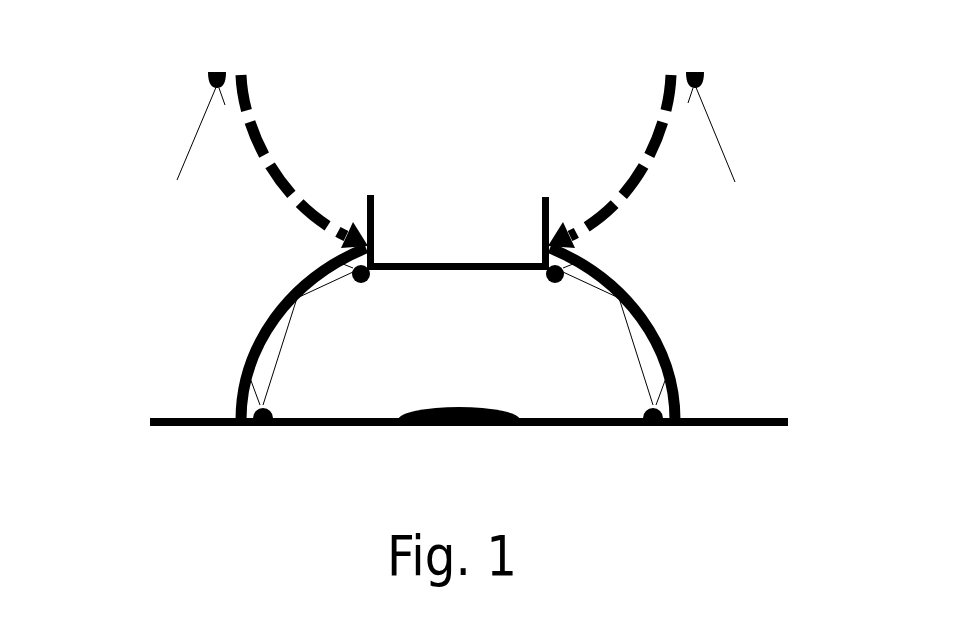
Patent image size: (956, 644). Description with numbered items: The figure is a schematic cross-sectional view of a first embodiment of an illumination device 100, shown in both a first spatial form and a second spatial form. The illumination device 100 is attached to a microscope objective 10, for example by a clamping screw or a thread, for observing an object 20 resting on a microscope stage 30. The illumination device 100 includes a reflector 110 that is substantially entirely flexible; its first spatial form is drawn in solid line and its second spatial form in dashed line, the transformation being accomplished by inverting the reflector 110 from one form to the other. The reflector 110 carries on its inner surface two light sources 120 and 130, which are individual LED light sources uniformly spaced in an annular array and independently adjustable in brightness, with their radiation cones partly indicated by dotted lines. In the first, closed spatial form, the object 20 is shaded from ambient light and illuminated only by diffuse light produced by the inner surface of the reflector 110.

The illumination device 100 is at (127, 80).
The microscope objective 10 is at (375, 210).
The reflector 110 is at (633, 168).
The light source 120 is at (220, 73).
The light source 130 is at (360, 283).
The object 20 is at (460, 410).
The microscope stage 30 is at (782, 429).